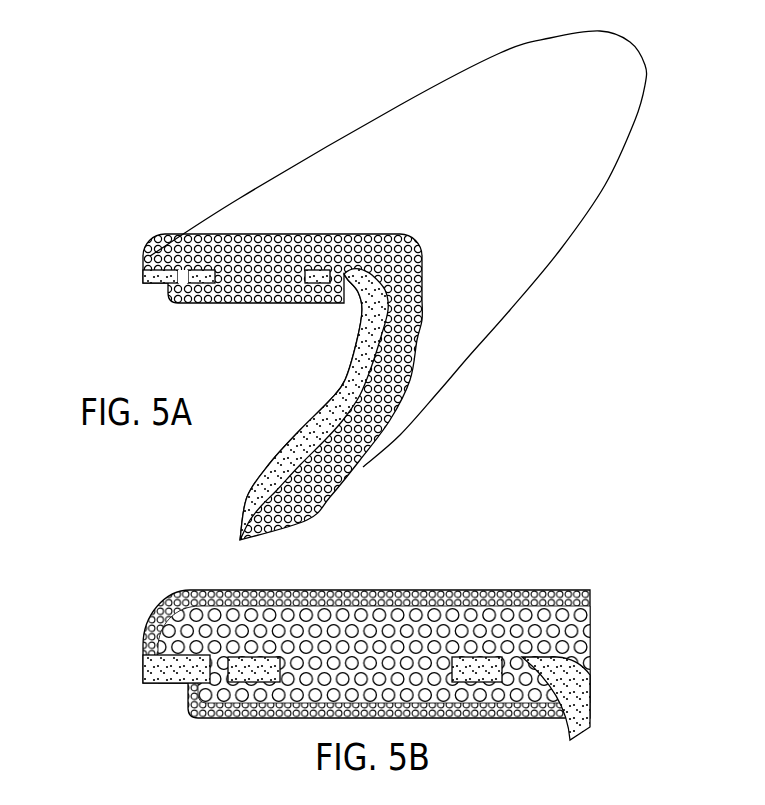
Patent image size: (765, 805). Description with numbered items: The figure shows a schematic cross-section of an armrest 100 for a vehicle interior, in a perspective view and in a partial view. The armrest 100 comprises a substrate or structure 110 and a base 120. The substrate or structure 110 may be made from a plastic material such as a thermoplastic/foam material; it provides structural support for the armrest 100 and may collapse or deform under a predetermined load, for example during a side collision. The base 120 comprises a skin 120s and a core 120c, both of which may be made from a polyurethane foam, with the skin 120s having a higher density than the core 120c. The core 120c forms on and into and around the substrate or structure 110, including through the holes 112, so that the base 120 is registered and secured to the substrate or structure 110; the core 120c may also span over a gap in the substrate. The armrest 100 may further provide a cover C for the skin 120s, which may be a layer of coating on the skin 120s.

In FIG. 5A, the armrest 100 is at (225, 278).
In FIG. 5B, the armrest 100 is at (333, 638).
In FIG. 5A, the cover C is at (235, 213).
In FIG. 5A, the substrate or structure 110 is at (145, 278).
In FIG. 5B, the substrate or structure 110 is at (143, 672).
In FIG. 5A, the hole 112 is at (333, 303).
In FIG. 5B, the hole 112 is at (193, 708).
In FIG. 5B, the base 120 is at (333, 664).
In FIG. 5A, the skin 120s is at (198, 235).
In FIG. 5B, the skin 120s is at (188, 592).
In FIG. 5A, the core 120c is at (170, 238).
In FIG. 5B, the core 120c is at (160, 618).